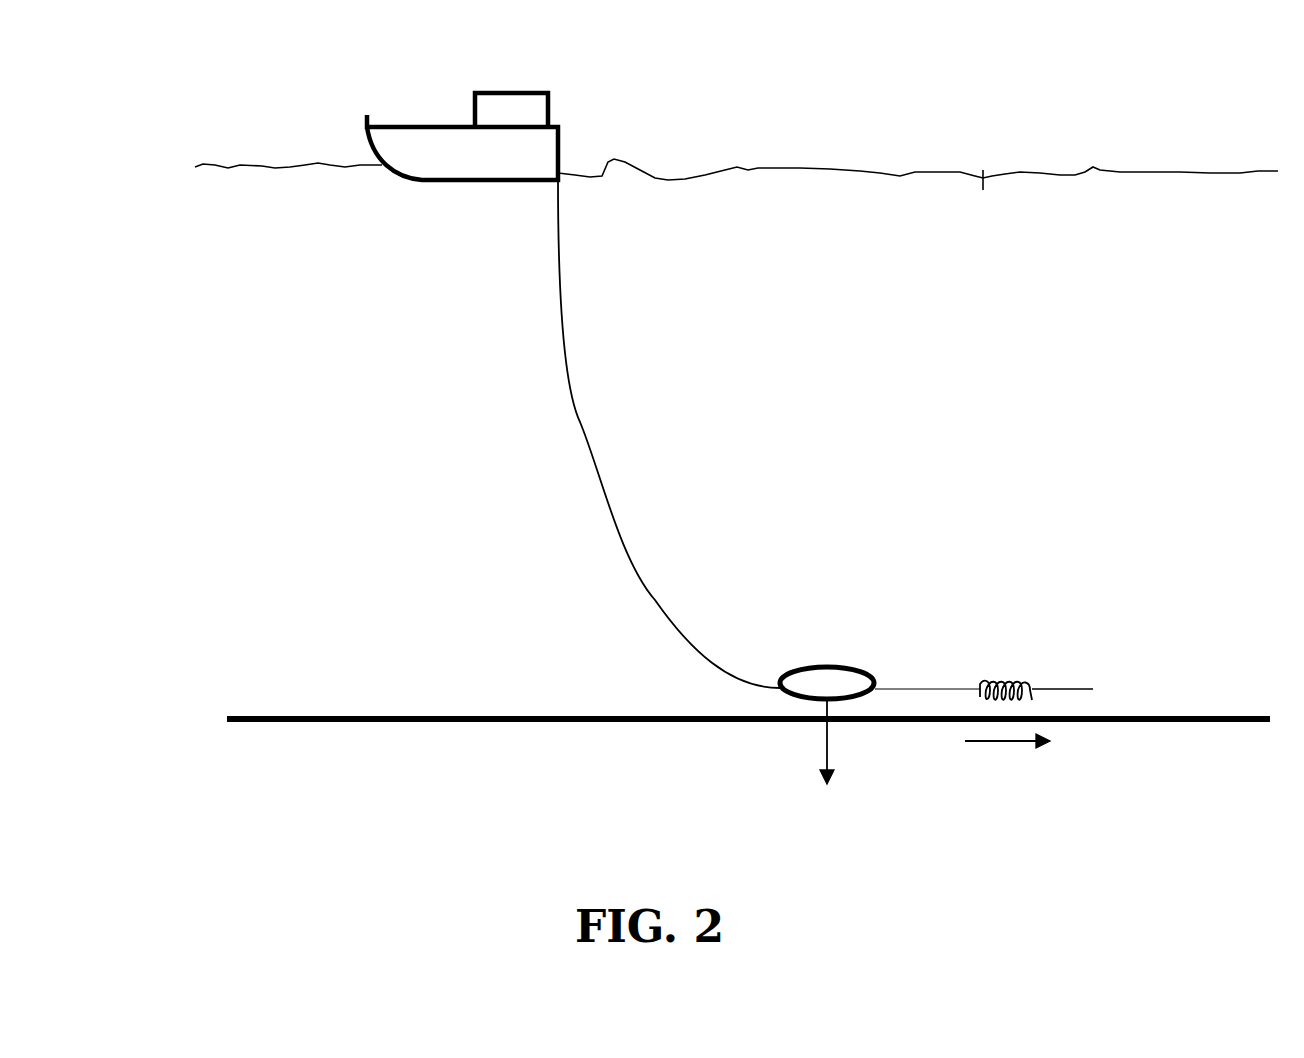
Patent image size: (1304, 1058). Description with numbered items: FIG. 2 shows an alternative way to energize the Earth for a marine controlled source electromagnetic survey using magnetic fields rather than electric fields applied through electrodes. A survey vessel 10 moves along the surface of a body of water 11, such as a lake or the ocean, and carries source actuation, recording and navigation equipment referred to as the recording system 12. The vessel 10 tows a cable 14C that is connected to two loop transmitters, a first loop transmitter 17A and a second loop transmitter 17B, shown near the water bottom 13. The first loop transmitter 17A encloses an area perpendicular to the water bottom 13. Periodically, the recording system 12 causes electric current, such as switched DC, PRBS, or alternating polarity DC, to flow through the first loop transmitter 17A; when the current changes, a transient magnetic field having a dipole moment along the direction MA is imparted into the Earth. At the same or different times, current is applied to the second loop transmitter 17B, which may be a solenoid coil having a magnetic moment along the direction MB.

The survey vessel 10 is at (412, 137).
The body of water 11 is at (865, 170).
The recording system 12 is at (522, 102).
The water bottom 13 is at (1088, 716).
The cable 14C is at (580, 422).
The first loop transmitter 17A is at (823, 663).
The second loop transmitter 17B is at (997, 683).